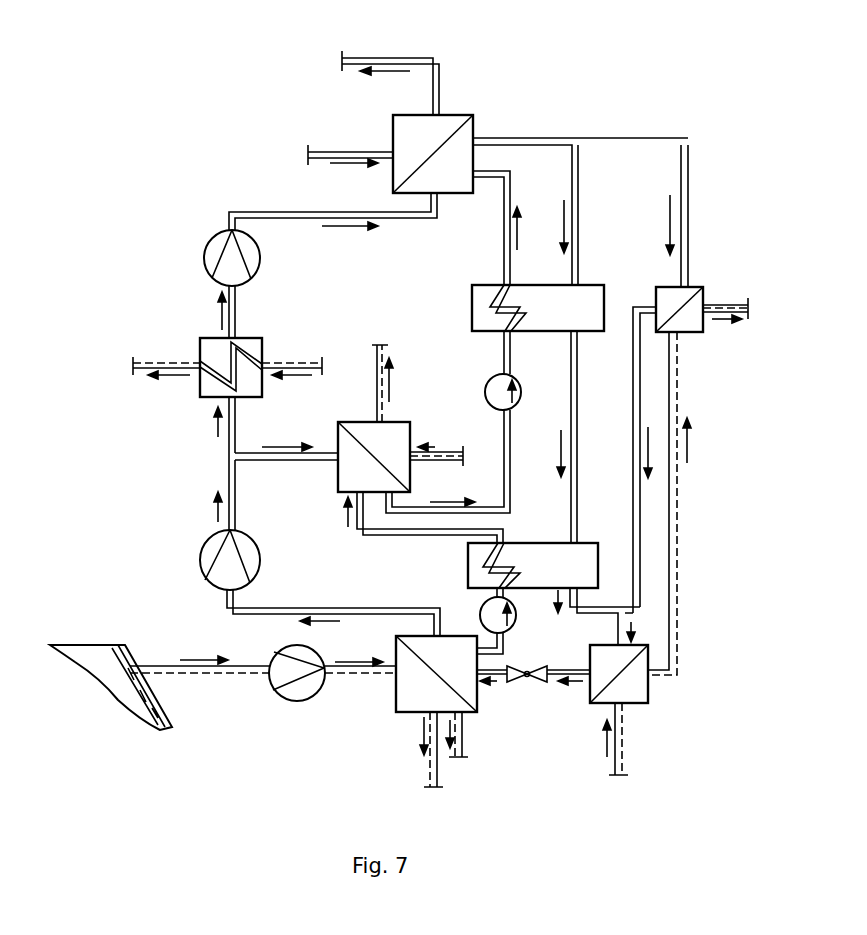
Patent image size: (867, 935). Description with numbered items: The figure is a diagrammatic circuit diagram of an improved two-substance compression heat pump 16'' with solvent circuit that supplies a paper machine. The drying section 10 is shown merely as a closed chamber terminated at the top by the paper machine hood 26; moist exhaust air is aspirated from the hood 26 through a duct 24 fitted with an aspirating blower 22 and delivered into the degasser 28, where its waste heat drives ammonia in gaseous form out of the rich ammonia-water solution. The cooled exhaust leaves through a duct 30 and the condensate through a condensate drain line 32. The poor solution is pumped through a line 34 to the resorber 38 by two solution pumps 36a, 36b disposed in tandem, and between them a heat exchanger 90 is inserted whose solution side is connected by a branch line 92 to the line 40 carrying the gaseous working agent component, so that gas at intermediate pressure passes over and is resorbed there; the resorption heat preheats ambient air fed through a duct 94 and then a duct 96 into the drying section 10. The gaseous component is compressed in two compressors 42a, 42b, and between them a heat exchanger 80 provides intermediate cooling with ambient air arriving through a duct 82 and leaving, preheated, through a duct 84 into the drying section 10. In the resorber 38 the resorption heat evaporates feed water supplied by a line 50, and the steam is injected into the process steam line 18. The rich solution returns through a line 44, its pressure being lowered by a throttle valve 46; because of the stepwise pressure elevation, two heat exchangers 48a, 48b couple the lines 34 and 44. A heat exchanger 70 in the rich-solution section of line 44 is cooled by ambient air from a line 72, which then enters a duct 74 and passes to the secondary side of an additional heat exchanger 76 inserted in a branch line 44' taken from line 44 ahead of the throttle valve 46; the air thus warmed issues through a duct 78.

The drying section 10 is at (76, 638).
The two-substance compression heat pump 16'' is at (114, 302).
The process steam line 18 is at (397, 55).
The aspirating blower 22 is at (298, 701).
The duct 24 is at (155, 664).
The paper machine hood 26 is at (108, 644).
The degasser 28 is at (392, 700).
The duct 30 is at (429, 766).
The condensate drain line 32 is at (466, 743).
The line 34 is at (505, 217).
The solution pump 36a is at (481, 608).
The solution pump 36b is at (515, 379).
The resorber 38 is at (480, 121).
The line 40 is at (303, 211).
The compressor 42a is at (200, 553).
The compressor 42b is at (206, 254).
The line 44 is at (580, 375).
The branch line 44' is at (664, 379).
The throttle valve 46 is at (527, 683).
The heat exchanger 48a is at (468, 558).
The heat exchanger 48b is at (472, 292).
The line 50 is at (352, 150).
The heat exchanger 70 is at (598, 704).
The line 72 is at (626, 744).
The duct 74 is at (679, 511).
The additional heat exchanger 76 is at (700, 286).
The duct 78 is at (748, 300).
The heat exchanger 80 is at (206, 400).
The duct 82 is at (299, 361).
The duct 84 is at (161, 361).
The heat exchanger 90 is at (404, 418).
The branch line 92 is at (293, 461).
The duct 94 is at (452, 450).
The duct 96 is at (377, 382).